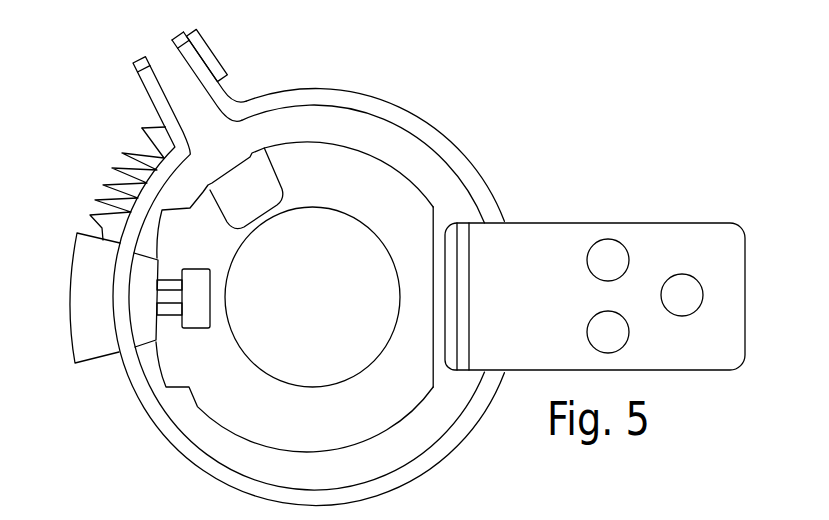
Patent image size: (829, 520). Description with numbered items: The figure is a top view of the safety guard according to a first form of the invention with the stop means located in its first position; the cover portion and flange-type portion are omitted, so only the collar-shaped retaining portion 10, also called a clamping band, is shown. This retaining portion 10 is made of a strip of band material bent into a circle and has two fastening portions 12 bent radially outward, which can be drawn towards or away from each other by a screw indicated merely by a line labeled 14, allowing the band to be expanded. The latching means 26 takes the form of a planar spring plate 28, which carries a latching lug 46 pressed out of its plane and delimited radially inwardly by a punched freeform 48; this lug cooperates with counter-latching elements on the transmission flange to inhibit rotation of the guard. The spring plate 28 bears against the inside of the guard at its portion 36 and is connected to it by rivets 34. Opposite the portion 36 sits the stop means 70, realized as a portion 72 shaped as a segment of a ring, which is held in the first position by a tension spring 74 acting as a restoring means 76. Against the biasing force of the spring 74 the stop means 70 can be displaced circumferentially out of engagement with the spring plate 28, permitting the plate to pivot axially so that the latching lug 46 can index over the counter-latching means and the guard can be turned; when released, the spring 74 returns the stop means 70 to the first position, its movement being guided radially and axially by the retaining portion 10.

The collar-shaped retaining portion 10 is at (338, 97).
The fastening portions 12 is at (215, 90).
The screw 14 is at (208, 55).
The latching means 26 is at (311, 256).
The spring plate 28 is at (372, 165).
The rivets 34 is at (608, 250).
The portion of the spring plate 36 is at (548, 243).
The latching lug 46 is at (165, 293).
The punched freeform 48 is at (195, 317).
The stop means 70 is at (83, 255).
The ring-segment-shaped portion 72 is at (82, 335).
The spring 74 is at (113, 153).
The restoring means 76 is at (142, 128).